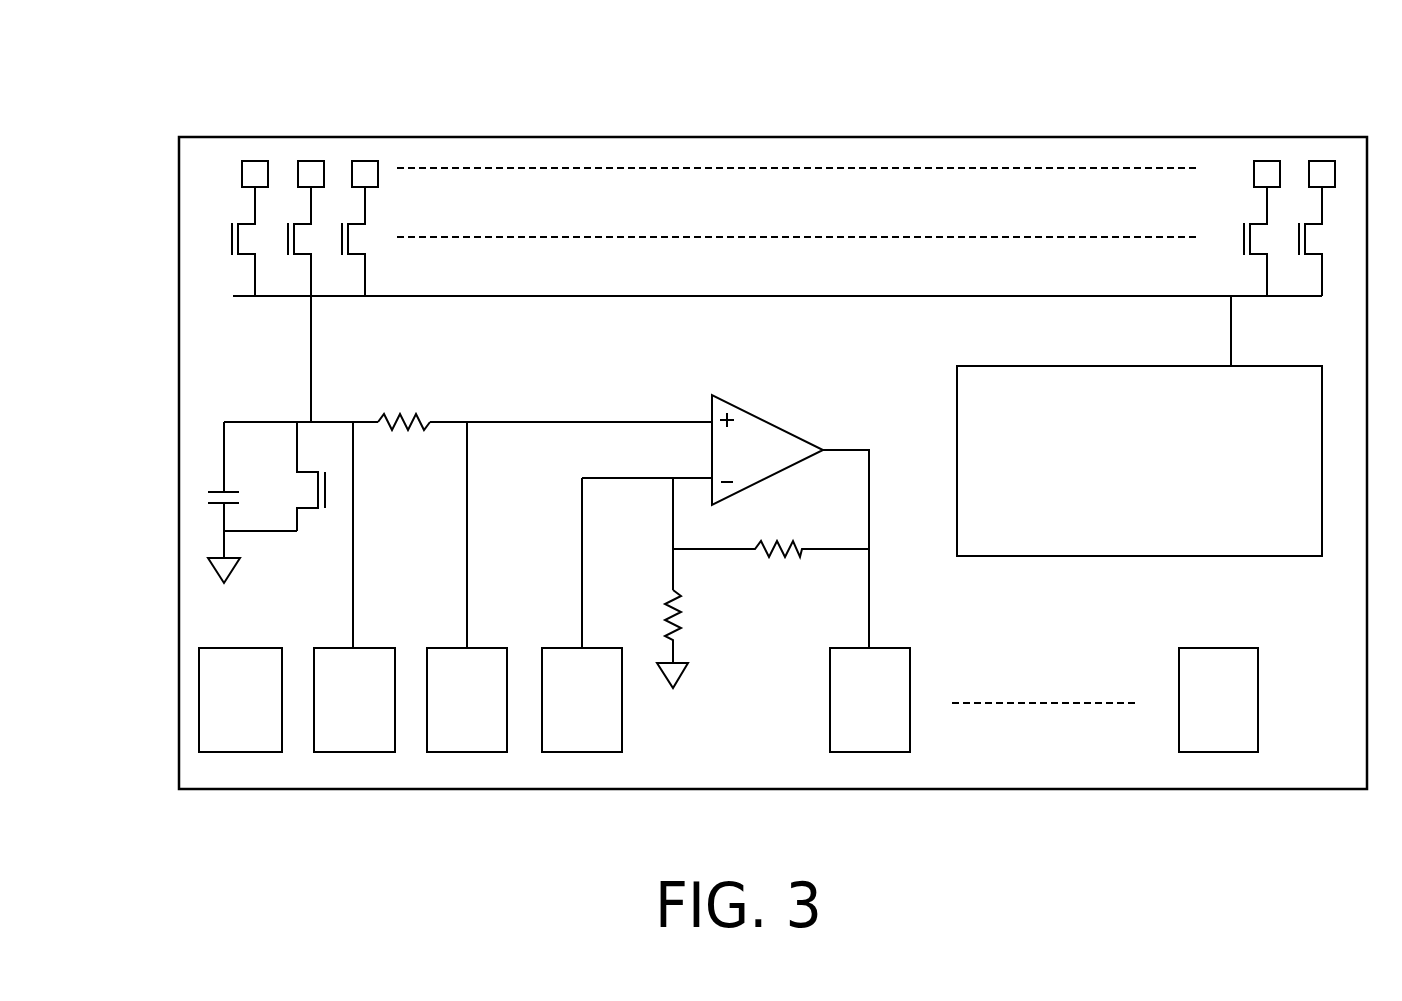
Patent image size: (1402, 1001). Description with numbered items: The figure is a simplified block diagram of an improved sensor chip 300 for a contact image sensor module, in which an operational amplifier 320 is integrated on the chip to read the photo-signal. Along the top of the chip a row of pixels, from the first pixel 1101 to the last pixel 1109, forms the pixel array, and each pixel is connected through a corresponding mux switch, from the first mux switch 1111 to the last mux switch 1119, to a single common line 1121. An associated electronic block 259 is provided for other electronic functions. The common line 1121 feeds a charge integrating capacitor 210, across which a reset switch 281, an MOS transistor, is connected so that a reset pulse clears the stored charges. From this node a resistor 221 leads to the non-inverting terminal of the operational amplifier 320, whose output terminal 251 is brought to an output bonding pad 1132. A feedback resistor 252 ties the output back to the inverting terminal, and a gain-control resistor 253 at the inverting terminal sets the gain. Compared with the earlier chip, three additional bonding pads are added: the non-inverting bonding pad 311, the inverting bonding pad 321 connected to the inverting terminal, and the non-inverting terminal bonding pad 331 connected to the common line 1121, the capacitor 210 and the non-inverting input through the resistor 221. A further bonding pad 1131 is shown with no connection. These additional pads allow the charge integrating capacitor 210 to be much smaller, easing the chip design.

The improved sensor chip 300 is at (178, 742).
The pixel 1101 is at (242, 178).
The mux switch 1111 is at (232, 240).
The pixel 1109 is at (1320, 160).
The mux switch 1119 is at (1312, 247).
The common line 1121 is at (556, 297).
The associated electronic block 259 is at (1060, 366).
The charge integrating capacitor 210 is at (215, 491).
The reset switch 281 is at (312, 510).
The resistor 221 is at (400, 432).
The operational amplifier 320 is at (758, 410).
The output terminal 251 is at (858, 448).
The feedback resistor 252 is at (785, 560).
The gain-control resistor 253 is at (665, 615).
The bonding pad 1131 is at (240, 752).
The non-inverting bonding pad 311 is at (353, 752).
The non-inverting terminal bonding pad 331 is at (467, 752).
The inverting bonding pad 321 is at (582, 752).
The output bonding pad 1132 is at (875, 752).